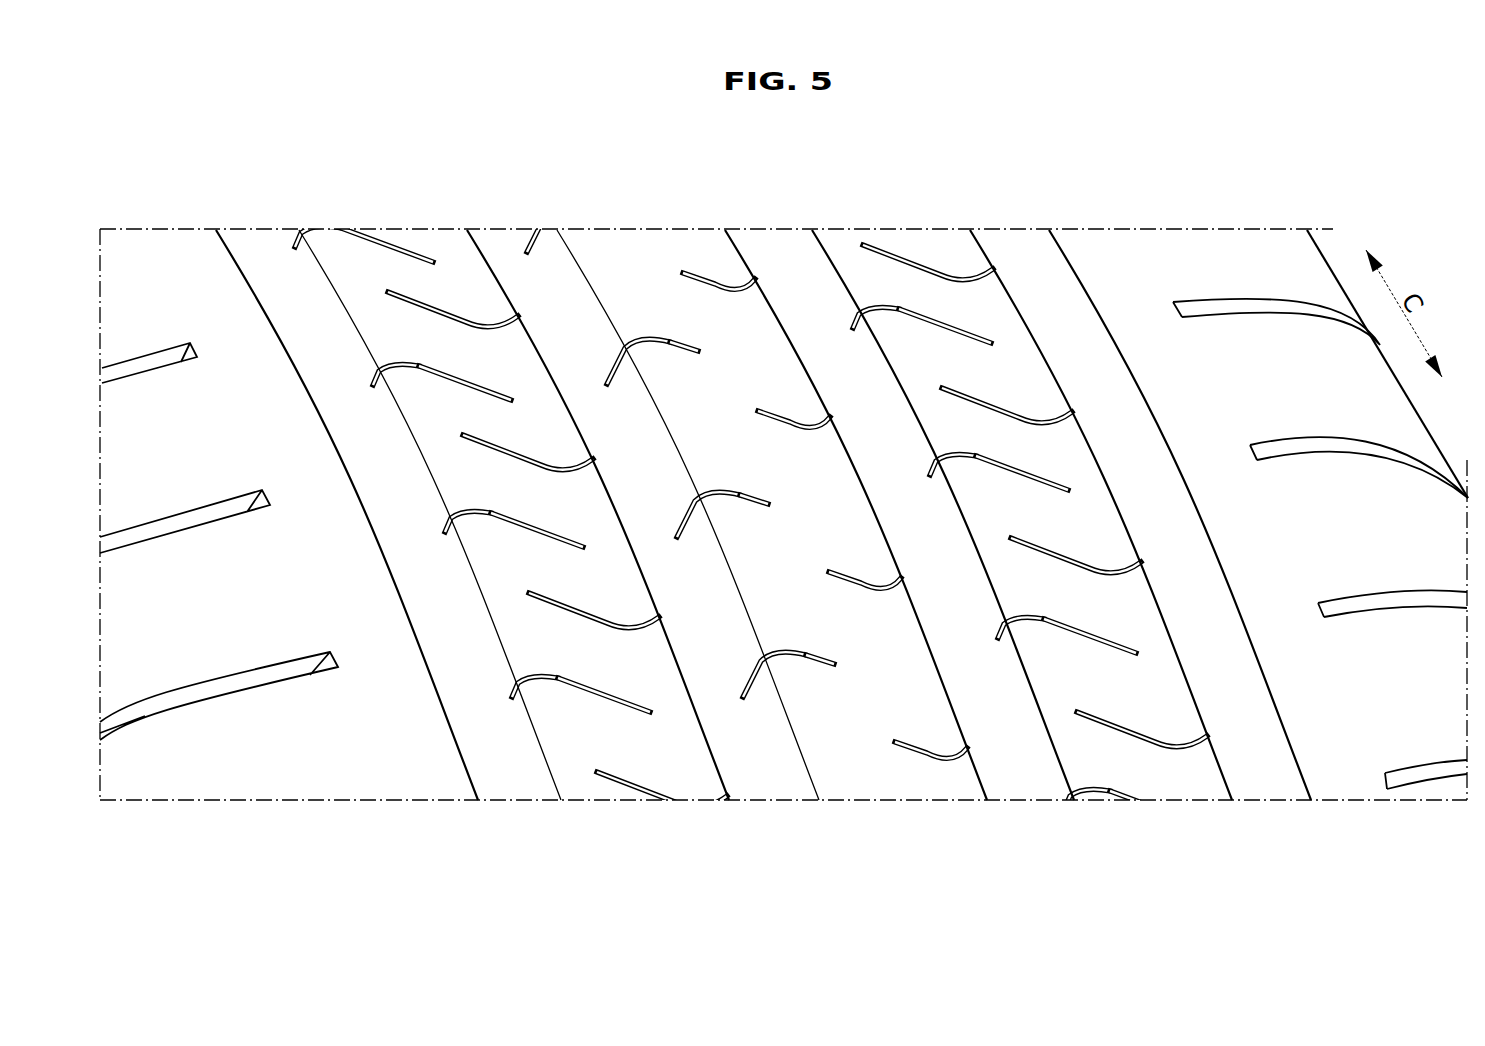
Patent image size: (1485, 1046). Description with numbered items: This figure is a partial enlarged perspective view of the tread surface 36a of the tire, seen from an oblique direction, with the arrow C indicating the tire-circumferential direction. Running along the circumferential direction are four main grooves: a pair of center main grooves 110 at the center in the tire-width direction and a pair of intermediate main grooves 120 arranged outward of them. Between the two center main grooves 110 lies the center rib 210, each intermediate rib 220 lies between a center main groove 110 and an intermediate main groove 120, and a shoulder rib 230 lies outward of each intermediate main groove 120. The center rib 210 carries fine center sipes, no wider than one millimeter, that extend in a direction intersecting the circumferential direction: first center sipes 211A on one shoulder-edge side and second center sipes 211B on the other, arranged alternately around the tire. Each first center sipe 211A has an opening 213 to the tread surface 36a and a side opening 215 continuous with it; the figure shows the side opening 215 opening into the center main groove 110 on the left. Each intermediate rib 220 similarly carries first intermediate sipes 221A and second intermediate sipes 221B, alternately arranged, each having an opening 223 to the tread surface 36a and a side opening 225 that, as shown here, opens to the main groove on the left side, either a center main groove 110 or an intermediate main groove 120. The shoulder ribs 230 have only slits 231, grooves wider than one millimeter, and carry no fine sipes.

The tread surface 36a is at (1100, 214).
The center main groove 110 is at (780, 787).
The intermediate main groove 120 is at (513, 783).
The center rib 210 is at (731, 508).
The first center sipe 211A is at (665, 524).
The second center sipe 211B is at (703, 280).
The opening 213 is at (681, 354).
The side opening 215 is at (608, 372).
The intermediate rib 220 is at (694, 498).
The first intermediate sipe 221A is at (691, 515).
The second intermediate sipe 221B is at (460, 313).
The opening 223 is at (470, 377).
The side opening 225 is at (372, 380).
The shoulder rib 230 is at (122, 247).
The slit 231 is at (1233, 297).